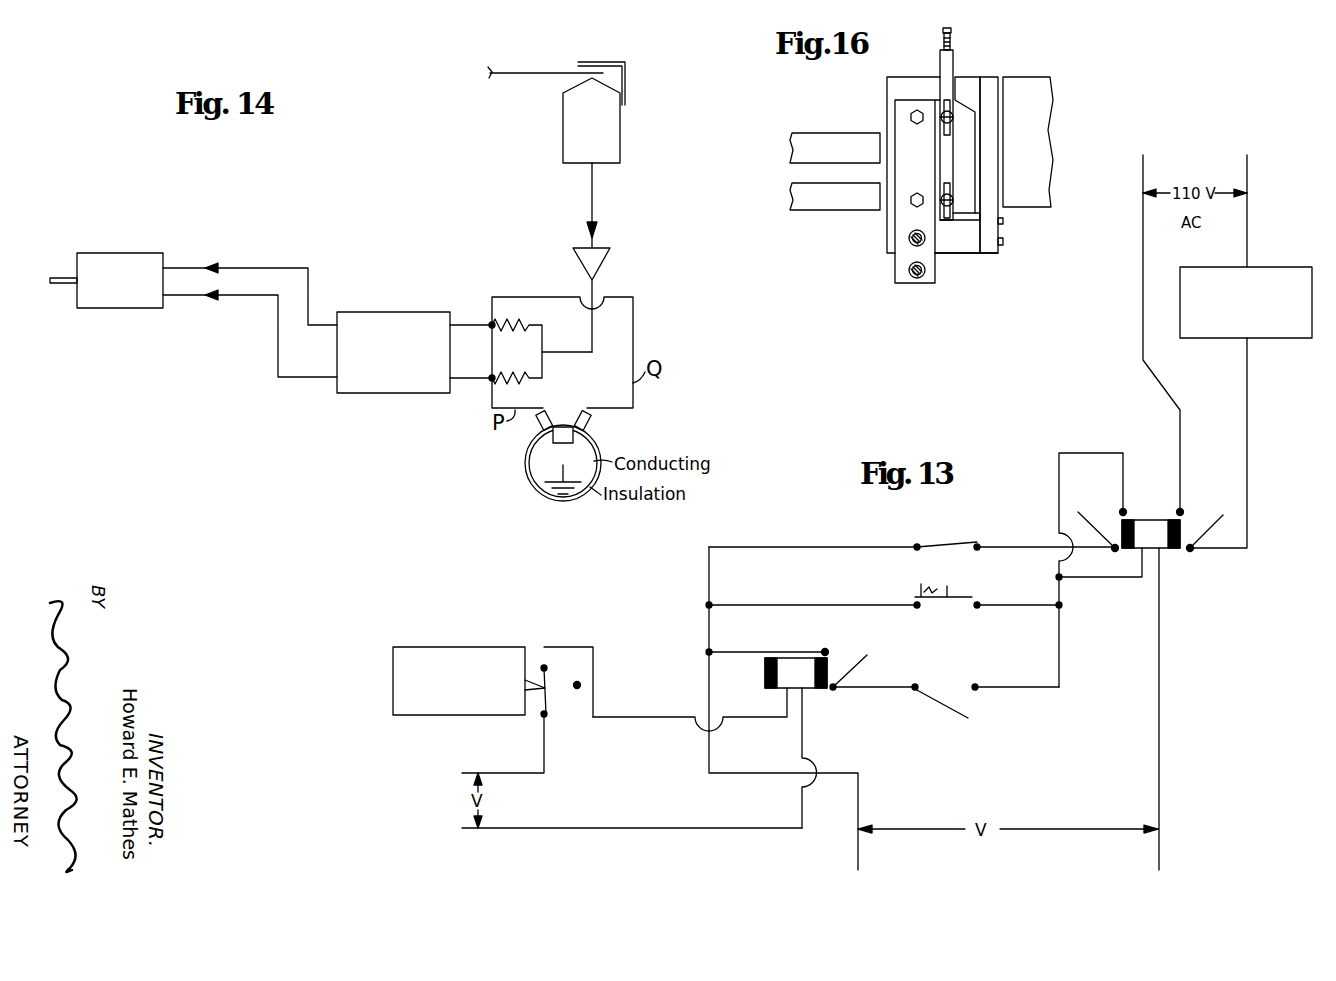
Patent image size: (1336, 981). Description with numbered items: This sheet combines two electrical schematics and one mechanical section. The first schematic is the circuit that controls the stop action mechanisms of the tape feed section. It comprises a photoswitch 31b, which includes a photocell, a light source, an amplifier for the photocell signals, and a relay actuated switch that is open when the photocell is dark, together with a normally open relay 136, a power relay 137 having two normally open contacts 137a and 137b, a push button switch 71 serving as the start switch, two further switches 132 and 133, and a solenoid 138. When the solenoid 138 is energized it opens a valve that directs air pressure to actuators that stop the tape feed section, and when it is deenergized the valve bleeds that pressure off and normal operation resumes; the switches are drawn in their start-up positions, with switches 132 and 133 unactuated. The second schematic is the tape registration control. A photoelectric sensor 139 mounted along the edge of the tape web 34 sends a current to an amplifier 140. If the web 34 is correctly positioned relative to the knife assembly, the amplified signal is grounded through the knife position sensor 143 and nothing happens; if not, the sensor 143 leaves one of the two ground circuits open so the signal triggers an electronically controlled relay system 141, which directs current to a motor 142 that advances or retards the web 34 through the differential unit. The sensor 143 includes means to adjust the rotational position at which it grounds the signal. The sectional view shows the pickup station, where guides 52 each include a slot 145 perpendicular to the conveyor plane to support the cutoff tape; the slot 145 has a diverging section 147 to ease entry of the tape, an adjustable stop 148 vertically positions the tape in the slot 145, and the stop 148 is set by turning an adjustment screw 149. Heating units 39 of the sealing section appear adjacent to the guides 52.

In FIG. 16, the guides 52 is at (897, 90).
In FIG. 16, the adjustable stop 148 is at (946, 64).
In FIG. 16, the adjustment screw 149 is at (947, 33).
In FIG. 16, the diverging section 147 is at (975, 80).
In FIG. 16, the slot 145 is at (978, 162).
In FIG. 16, the heating units 39 is at (1045, 91).
In FIG. 14, the tape web 34 is at (527, 73).
In FIG. 14, the photoelectric sensor 139 is at (620, 142).
In FIG. 14, the amplifier 140 is at (596, 257).
In FIG. 14, the electronically controlled relay system 141 is at (403, 385).
In FIG. 14, the motor 142 is at (133, 300).
In FIG. 14, the knife position sensor 143 is at (580, 447).
In FIG. 13, the switch 132 is at (923, 547).
In FIG. 13, the push button switch 71 is at (952, 586).
In FIG. 13, the normally open relay 136 is at (760, 675).
In FIG. 13, the switch 133 is at (933, 697).
In FIG. 13, the photoswitch 31b is at (410, 707).
In FIG. 13, the solenoid 138 is at (1265, 331).
In FIG. 13, the power relay 137 is at (1140, 527).
In FIG. 13, the normally open contact 137a is at (1097, 528).
In FIG. 13, the normally open contact 137b is at (1202, 532).